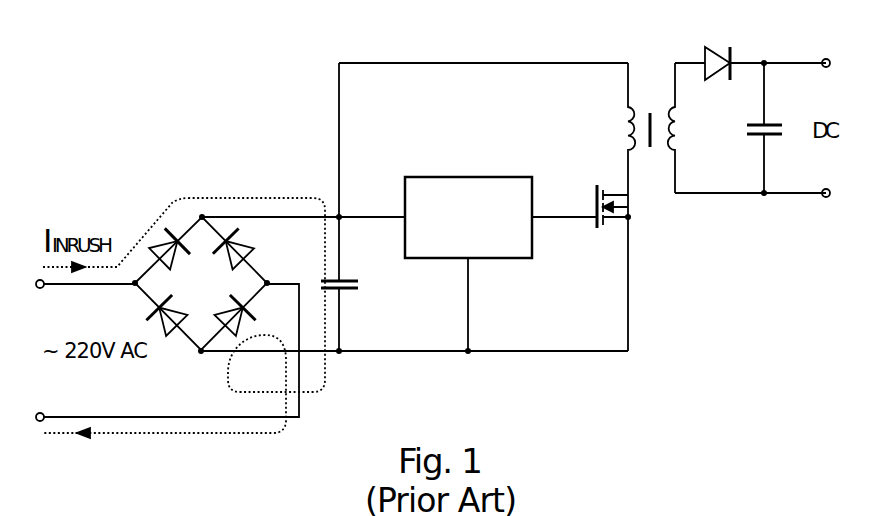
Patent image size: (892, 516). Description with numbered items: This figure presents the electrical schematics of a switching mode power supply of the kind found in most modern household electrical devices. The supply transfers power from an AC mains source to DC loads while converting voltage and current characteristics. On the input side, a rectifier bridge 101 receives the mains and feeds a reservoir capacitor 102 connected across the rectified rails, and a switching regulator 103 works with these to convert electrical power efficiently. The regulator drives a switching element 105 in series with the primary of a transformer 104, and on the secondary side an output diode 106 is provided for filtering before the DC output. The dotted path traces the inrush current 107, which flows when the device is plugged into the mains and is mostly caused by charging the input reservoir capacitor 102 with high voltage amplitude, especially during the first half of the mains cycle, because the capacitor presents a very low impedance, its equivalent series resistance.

The rectifier bridge 101 is at (194, 277).
The reservoir capacitor 102 is at (457, 328).
The switching regulator 103 is at (463, 188).
The transformer 104 is at (655, 97).
The switching element 105 is at (725, 243).
The output diode 106 is at (825, 35).
The inrush current 107 is at (82, 230).